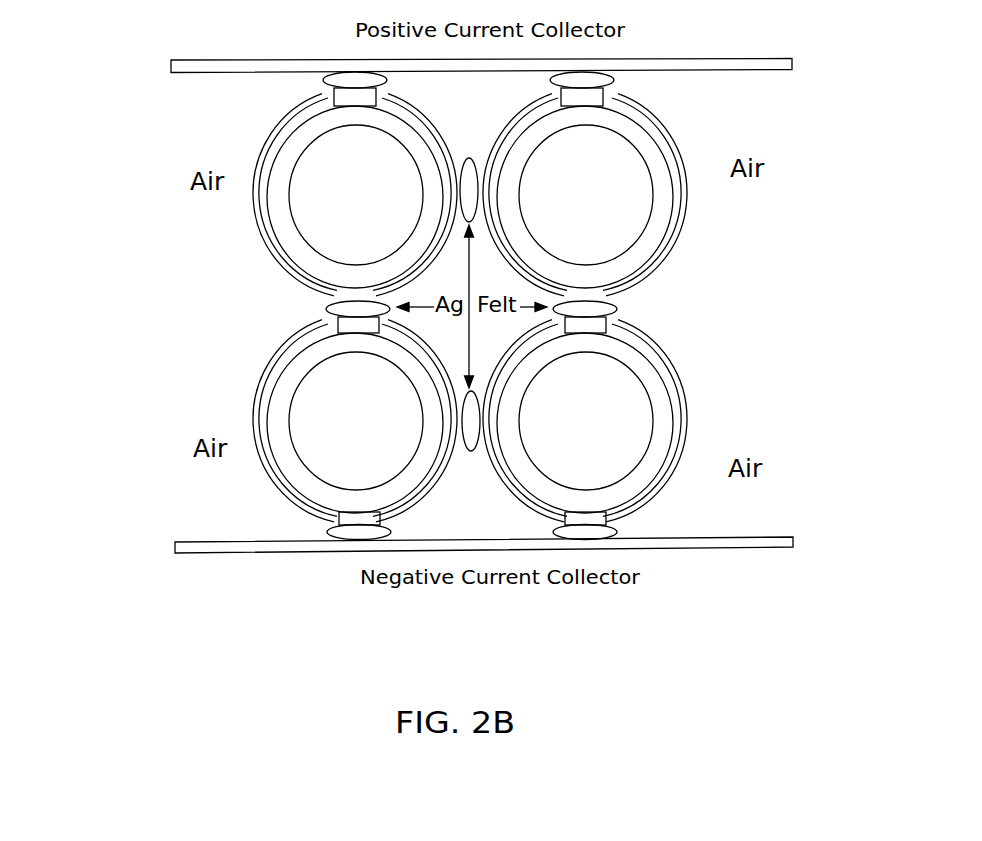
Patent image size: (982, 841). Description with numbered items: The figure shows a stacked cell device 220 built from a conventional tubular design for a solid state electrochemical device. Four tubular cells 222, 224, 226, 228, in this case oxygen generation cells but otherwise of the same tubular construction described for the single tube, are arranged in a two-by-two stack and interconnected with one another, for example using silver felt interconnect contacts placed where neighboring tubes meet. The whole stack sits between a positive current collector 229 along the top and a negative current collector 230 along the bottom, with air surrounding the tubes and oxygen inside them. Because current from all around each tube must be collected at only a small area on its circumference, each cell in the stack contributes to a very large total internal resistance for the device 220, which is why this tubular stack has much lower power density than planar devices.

The stacked cell device 220 is at (125, 187).
The tubular cell 222 is at (236, 231).
The tubular cell 224 is at (236, 399).
The tubular cell 226 is at (706, 227).
The tubular cell 228 is at (706, 394).
The positive current collector 229 is at (793, 63).
The negative current collector 230 is at (794, 541).